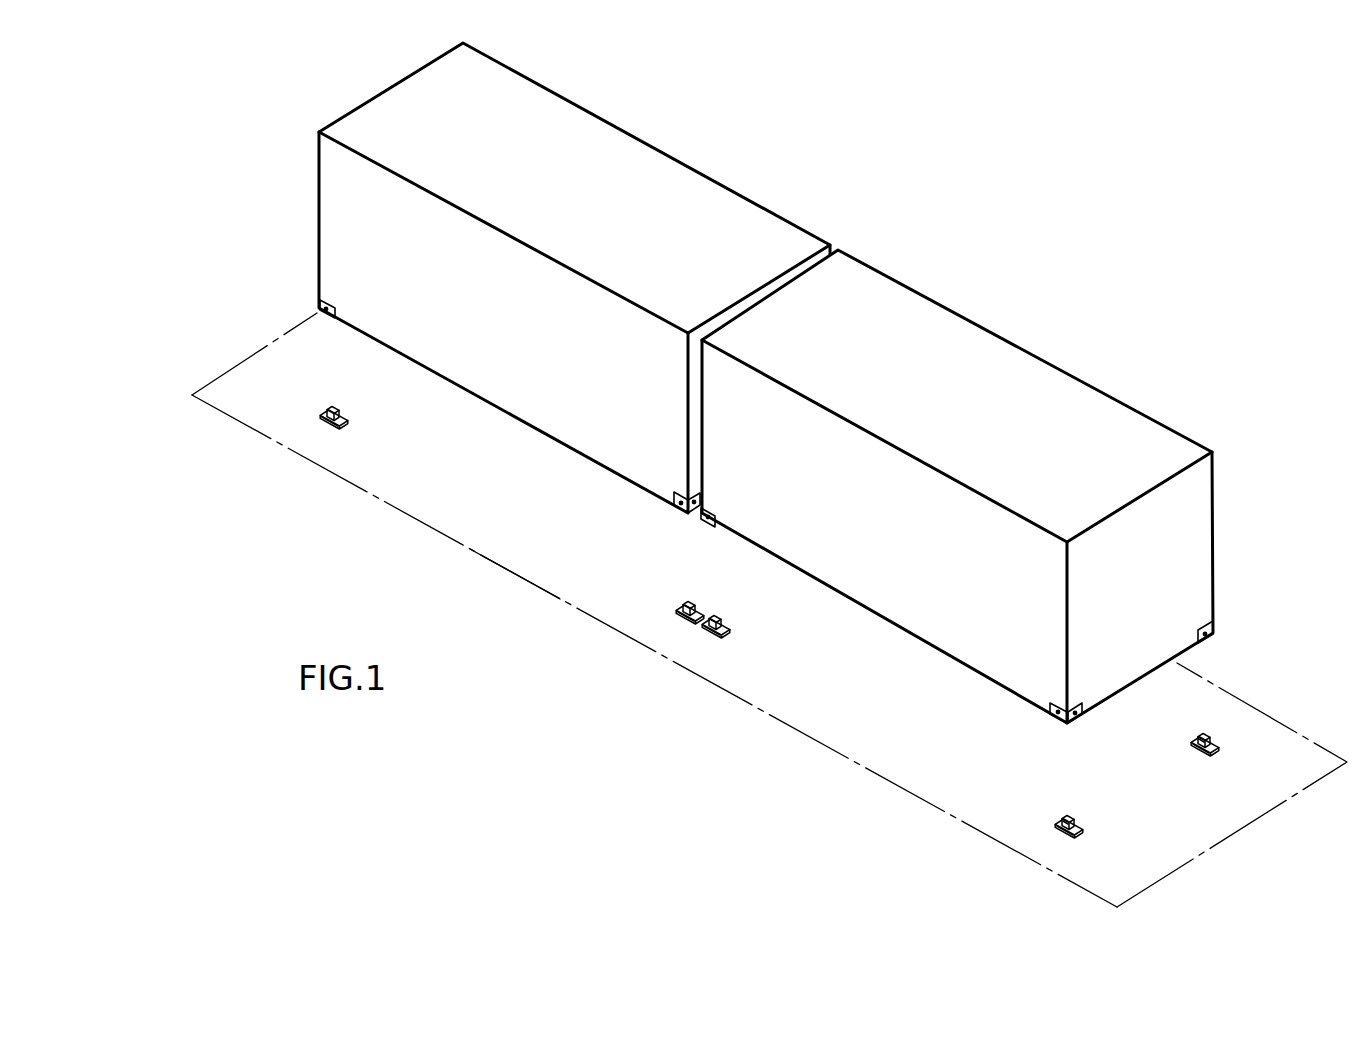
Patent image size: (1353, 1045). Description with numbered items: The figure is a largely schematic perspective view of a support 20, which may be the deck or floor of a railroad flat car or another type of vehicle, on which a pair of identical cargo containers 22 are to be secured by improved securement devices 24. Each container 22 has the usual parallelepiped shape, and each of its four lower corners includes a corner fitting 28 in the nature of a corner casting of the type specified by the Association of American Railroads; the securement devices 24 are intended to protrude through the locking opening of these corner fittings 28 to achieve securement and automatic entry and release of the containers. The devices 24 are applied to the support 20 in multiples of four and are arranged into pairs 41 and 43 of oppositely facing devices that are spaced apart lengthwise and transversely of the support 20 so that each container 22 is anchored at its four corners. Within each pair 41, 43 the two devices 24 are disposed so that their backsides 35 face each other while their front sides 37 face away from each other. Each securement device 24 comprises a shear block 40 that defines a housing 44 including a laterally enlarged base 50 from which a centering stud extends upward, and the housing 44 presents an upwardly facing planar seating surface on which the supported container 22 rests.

The support 20 is at (390, 478).
The cargo container 22 is at (347, 215).
The securement device 24 is at (315, 425).
The corner fitting 28 is at (333, 297).
The backside 35 is at (1197, 750).
The front side 37 is at (328, 432).
The shear block 40 is at (318, 407).
The pair of devices 41 is at (588, 695).
The pair of devices 43 is at (262, 470).
The housing 44 is at (345, 420).
The base 50 is at (343, 418).